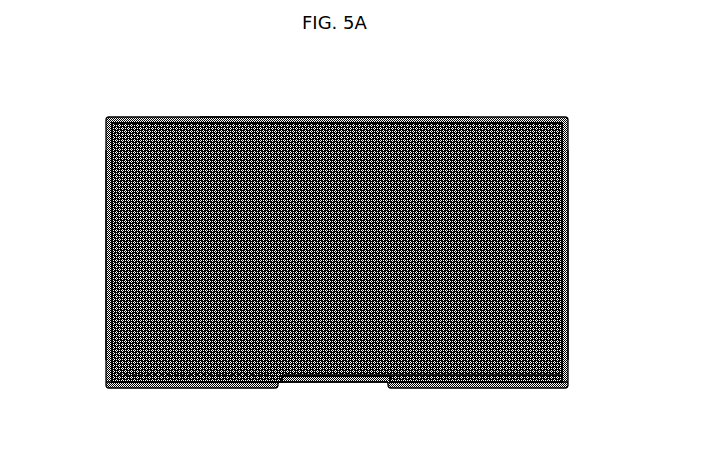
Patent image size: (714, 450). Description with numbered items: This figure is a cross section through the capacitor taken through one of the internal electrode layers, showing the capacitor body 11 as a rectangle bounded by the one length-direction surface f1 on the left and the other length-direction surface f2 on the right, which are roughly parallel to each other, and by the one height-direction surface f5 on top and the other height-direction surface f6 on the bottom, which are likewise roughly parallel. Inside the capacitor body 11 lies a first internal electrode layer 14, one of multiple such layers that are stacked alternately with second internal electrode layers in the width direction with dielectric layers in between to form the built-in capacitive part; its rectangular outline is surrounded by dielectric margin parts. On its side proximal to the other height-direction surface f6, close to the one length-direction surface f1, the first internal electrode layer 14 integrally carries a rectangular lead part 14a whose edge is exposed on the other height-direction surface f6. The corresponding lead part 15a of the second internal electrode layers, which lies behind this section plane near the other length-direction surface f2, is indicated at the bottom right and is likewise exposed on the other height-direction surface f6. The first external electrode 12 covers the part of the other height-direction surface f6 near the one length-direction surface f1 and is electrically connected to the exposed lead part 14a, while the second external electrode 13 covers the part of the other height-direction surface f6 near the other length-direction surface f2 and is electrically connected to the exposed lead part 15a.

The capacitor body 11 is at (106, 195).
The first external electrode 12 is at (190, 388).
The second external electrode 13 is at (480, 388).
The first internal electrode layer 14 is at (140, 276).
The lead part 14a is at (143, 388).
The lead part 15a is at (530, 388).
The one length-direction surface f1 is at (106, 240).
The other length-direction surface f2 is at (570, 239).
The one height-direction surface f5 is at (323, 117).
The other height-direction surface f6 is at (325, 382).